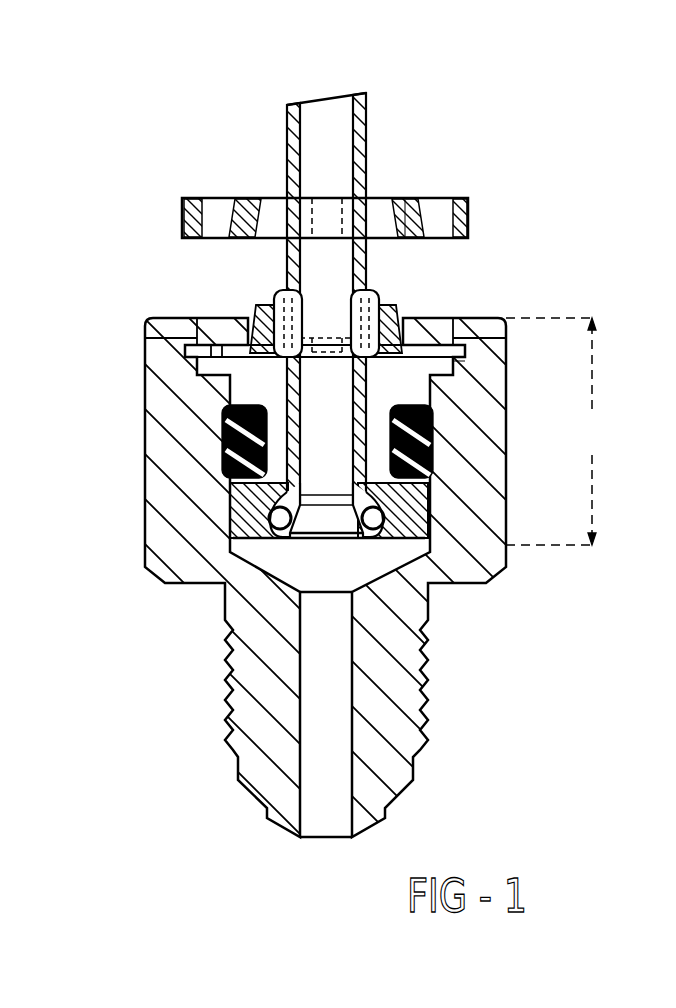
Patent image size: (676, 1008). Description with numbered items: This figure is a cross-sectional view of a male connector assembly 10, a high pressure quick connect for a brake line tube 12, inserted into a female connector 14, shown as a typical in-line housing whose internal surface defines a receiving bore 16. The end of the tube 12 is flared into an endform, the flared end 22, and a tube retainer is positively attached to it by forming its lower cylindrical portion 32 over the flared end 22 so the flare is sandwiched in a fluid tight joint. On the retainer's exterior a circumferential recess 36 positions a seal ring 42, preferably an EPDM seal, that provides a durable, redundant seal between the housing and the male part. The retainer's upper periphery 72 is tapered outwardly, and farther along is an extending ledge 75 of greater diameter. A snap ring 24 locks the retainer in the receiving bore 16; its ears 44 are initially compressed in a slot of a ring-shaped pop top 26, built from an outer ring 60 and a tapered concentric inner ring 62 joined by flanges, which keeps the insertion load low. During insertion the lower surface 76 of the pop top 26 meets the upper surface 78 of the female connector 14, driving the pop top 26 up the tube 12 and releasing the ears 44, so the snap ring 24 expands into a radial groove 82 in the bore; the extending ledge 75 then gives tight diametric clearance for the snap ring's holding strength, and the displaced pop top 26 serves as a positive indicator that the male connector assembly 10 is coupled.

The male connector assembly 10 is at (456, 308).
The tube 12 is at (287, 128).
The female connector 14 is at (506, 430).
The receiving bore 16 is at (195, 320).
The flared end 22 is at (258, 512).
The snap ring 24 is at (465, 350).
The pop top 26 is at (456, 203).
The lower cylindrical portion 32 is at (278, 535).
The circumferential recess 36 is at (266, 410).
The seal ring 42 is at (425, 448).
The ears 44 is at (276, 300).
The outer ring 60 is at (470, 212).
The inner ring 62 is at (395, 215).
The upper periphery 72 is at (240, 322).
The extending ledge 75 is at (466, 372).
The lower surface 76 is at (388, 240).
The upper surface 78 is at (483, 318).
The radial groove 82 is at (190, 338).